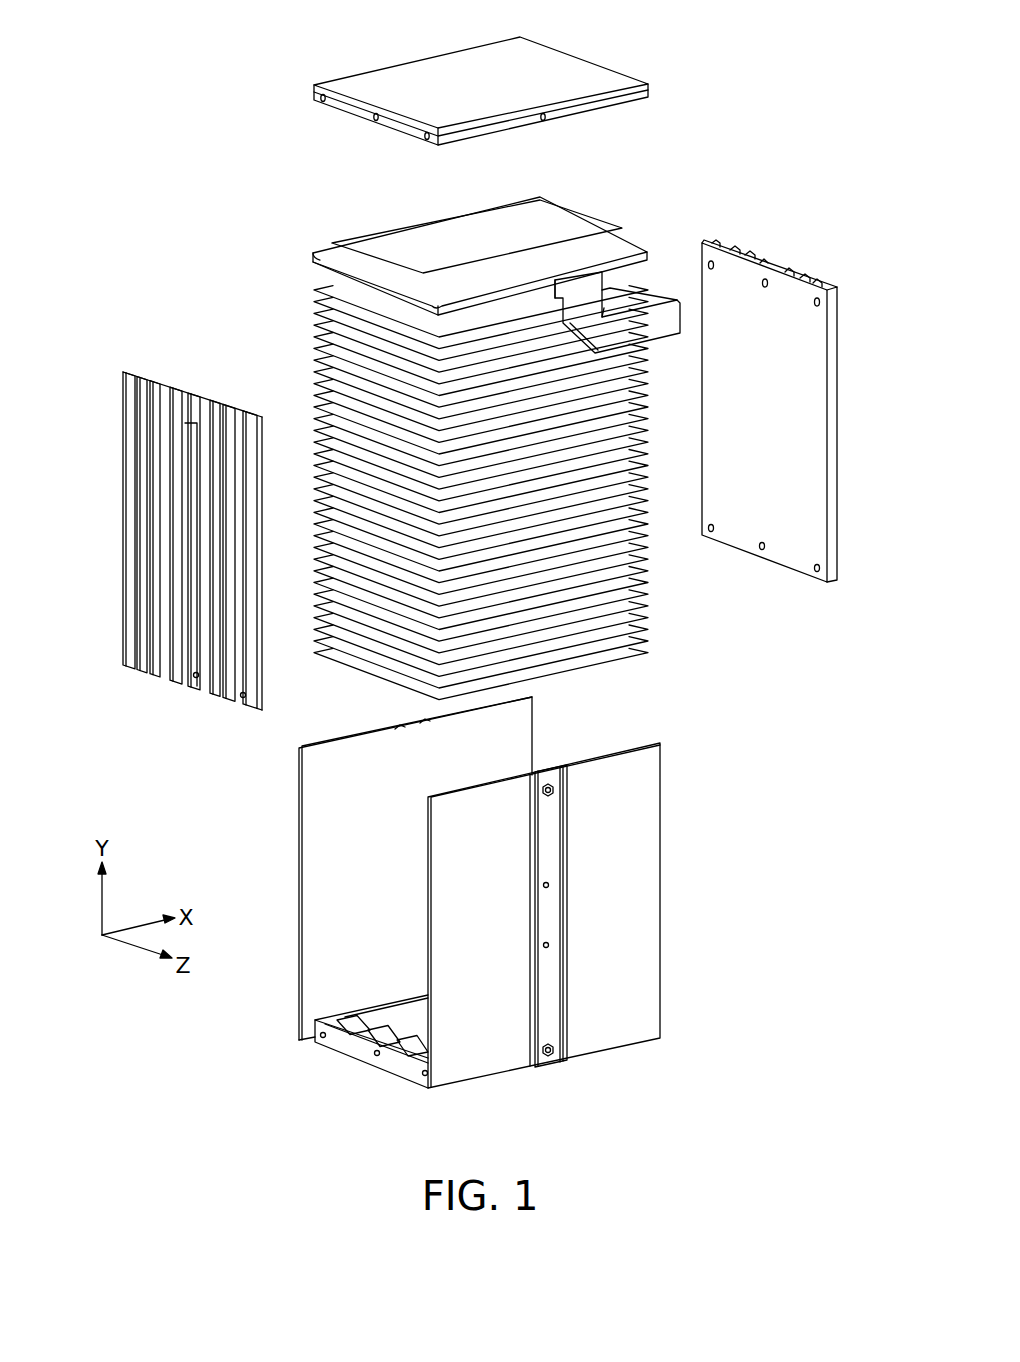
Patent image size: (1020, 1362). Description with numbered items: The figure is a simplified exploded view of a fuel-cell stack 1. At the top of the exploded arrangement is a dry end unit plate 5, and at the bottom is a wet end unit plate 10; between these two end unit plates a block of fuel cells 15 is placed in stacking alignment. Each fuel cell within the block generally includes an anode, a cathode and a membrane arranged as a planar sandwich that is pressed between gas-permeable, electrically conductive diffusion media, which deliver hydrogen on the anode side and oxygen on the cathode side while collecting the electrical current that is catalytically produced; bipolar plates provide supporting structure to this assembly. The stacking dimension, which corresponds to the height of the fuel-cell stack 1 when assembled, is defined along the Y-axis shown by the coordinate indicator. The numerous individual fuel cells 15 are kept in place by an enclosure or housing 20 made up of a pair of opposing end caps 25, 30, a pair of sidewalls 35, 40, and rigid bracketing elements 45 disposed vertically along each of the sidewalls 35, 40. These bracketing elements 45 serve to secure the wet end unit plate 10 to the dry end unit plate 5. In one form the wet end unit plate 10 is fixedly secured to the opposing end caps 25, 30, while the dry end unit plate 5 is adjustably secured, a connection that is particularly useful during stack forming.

The fuel-cell stack 1 is at (168, 106).
The dry end unit plate 5 is at (449, 70).
The wet end unit plate 10 is at (348, 1046).
The block of fuel cells 15 is at (644, 578).
The housing 20 is at (587, 664).
The end cap 25 is at (122, 510).
The end cap 30 is at (818, 431).
The sidewall 35 is at (661, 856).
The sidewall 40 is at (534, 736).
The rigid bracketing elements 45 is at (569, 960).